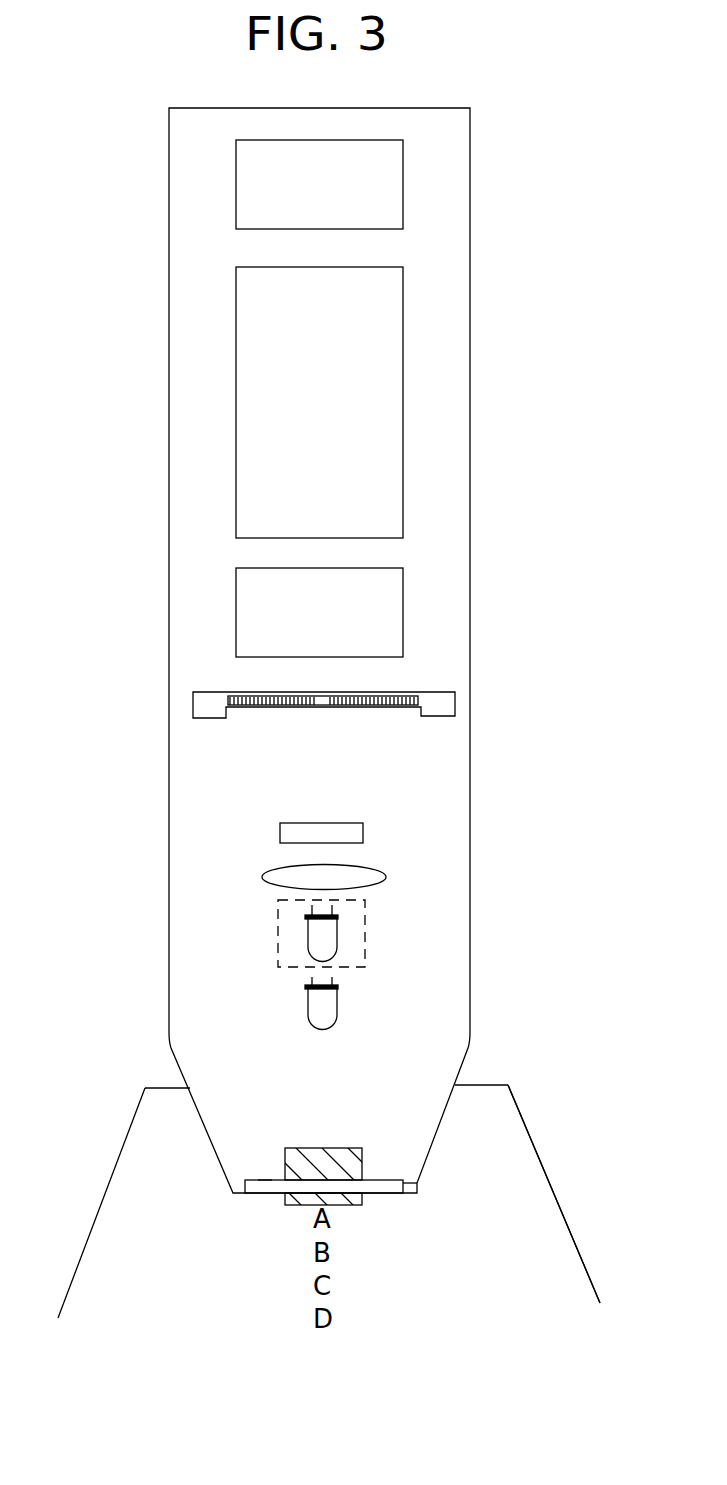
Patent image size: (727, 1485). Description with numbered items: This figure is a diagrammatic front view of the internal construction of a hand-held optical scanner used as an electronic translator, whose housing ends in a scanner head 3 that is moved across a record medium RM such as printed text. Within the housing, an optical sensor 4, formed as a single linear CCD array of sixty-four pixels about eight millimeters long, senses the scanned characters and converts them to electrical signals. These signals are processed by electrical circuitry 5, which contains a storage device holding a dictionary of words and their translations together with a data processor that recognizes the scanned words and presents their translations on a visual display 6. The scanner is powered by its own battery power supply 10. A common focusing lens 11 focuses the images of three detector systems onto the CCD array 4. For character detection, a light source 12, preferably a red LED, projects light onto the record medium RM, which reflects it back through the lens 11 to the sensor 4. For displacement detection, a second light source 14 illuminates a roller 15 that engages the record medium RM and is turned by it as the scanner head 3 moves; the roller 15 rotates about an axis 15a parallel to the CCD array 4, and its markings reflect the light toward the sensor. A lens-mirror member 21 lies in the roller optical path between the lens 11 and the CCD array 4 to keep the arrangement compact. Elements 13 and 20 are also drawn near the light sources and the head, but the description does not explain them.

The scanner head 3 is at (217, 1157).
The optical sensor 4 is at (442, 705).
The electrical circuitry 5 is at (390, 608).
The visual display 6 is at (385, 415).
The battery power supply 10 is at (383, 178).
The focusing lens 11 is at (372, 878).
The light source 12 is at (312, 937).
The bottom plate 13 is at (417, 1183).
The second light source 14 is at (315, 1005).
The roller 15 is at (333, 1147).
The axis 15a is at (265, 1178).
The frame 20 is at (358, 957).
The lens-mirror member 21 is at (358, 832).
The record medium RM is at (562, 1250).